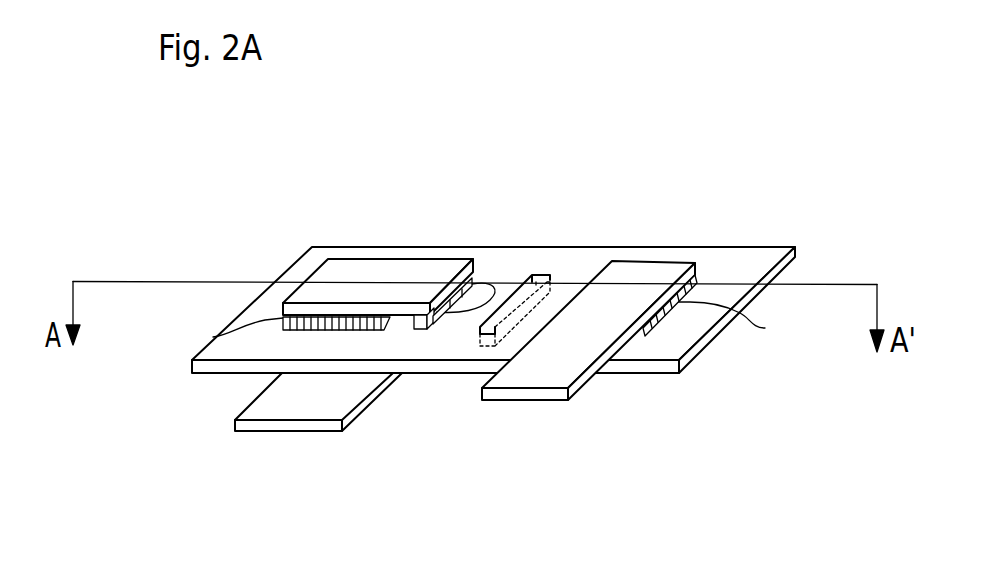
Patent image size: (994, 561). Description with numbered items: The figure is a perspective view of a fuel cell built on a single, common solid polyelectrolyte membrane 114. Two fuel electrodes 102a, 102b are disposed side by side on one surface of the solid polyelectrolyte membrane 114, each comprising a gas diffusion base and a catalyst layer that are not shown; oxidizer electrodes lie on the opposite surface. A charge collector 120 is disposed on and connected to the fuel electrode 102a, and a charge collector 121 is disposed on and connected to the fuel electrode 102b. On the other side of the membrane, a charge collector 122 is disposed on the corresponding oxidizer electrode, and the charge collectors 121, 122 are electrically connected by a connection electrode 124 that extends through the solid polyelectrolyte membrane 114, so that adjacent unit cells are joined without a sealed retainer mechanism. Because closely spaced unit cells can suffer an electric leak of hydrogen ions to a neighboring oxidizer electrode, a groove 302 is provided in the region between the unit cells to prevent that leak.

The solid polyelectrolyte membrane 114 is at (755, 268).
The charge collector 120 is at (413, 244).
The charge collector 121 is at (647, 272).
The charge collector 122 is at (302, 408).
The connection electrode 124 is at (433, 323).
The groove 302 is at (542, 273).
The fuel electrode 102a is at (213, 337).
The fuel electrode 102b is at (765, 328).